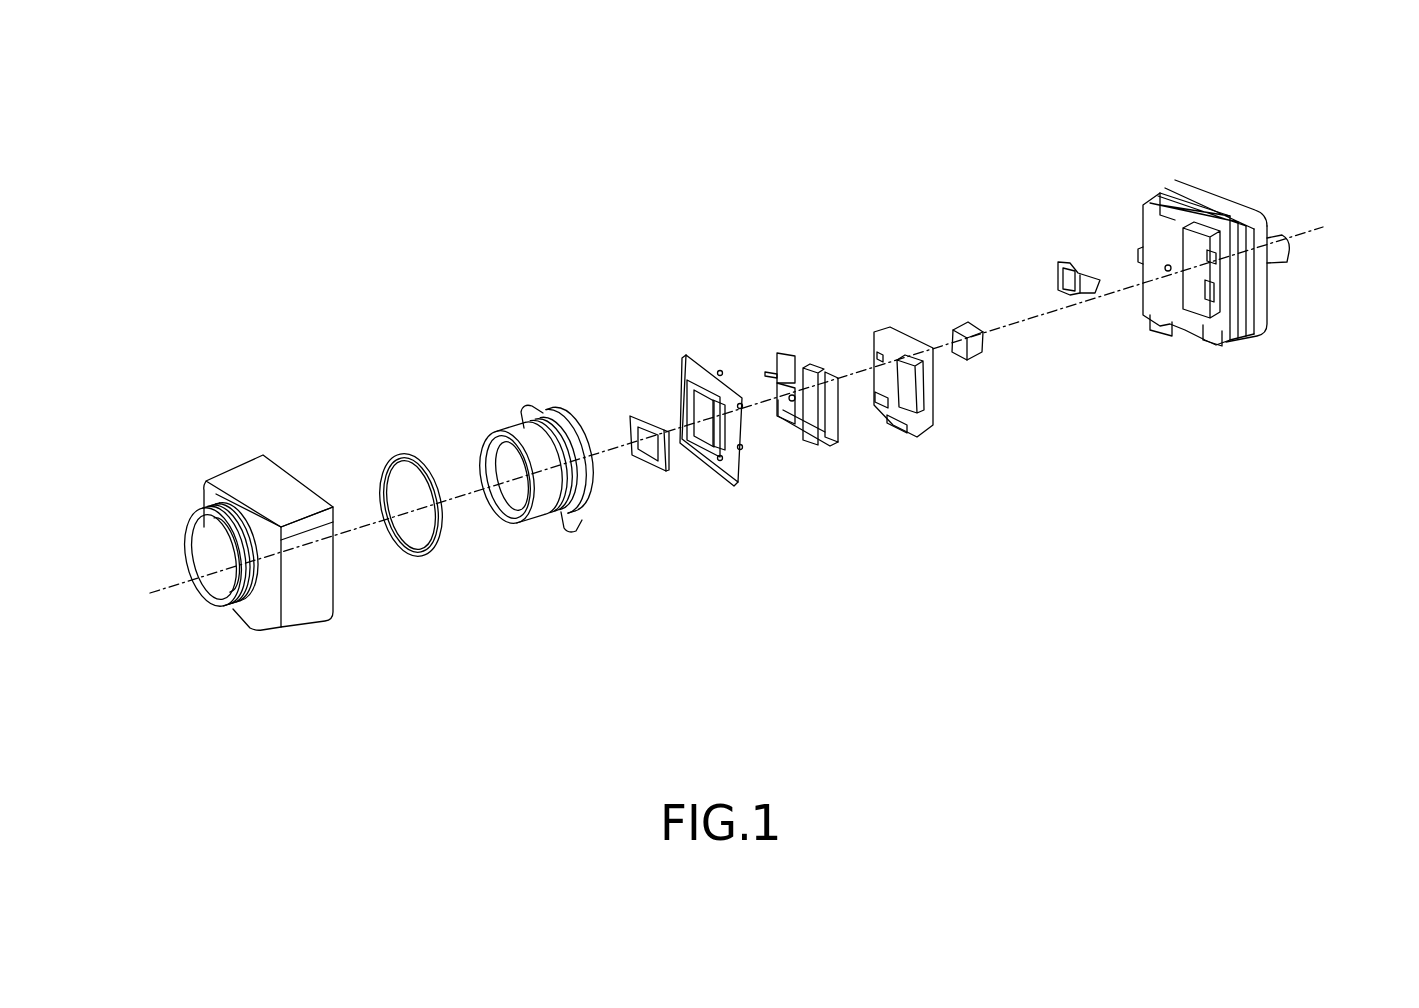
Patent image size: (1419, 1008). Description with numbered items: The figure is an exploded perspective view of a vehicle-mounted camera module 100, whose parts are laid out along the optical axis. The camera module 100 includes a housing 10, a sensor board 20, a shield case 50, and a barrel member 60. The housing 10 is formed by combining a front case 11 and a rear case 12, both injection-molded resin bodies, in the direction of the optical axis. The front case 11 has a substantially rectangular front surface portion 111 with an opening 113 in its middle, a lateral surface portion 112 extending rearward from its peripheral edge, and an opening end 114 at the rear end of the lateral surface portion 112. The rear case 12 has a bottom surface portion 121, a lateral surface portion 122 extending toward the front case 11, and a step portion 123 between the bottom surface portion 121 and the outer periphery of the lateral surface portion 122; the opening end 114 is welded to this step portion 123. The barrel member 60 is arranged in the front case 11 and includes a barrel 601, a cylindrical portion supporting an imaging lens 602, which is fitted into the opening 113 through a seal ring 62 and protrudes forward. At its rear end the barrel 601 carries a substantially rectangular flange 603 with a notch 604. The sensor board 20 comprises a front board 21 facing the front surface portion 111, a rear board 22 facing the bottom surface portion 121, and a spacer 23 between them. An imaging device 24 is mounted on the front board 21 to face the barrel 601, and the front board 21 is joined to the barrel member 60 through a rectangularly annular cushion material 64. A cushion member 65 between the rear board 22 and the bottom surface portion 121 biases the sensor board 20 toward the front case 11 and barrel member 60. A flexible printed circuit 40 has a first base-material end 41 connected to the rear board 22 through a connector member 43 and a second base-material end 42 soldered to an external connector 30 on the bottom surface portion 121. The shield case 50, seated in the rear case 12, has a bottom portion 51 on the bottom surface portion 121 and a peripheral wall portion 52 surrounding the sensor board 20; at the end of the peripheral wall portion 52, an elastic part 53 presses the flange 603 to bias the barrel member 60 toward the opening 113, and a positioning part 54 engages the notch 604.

The camera module 100 is at (1126, 618).
The housing 10 is at (735, 396).
The front case 11 is at (237, 432).
The front surface portion 111 is at (245, 614).
The lateral surface portion 112 is at (313, 570).
The opening 113 is at (201, 550).
The opening end 114 is at (290, 468).
The rear case 12 is at (1199, 160).
The bottom surface portion 121 is at (1273, 317).
The lateral surface portion 122 is at (1220, 210).
The step portion 123 is at (1253, 340).
The sensor board 20 is at (1033, 515).
The front board 21 is at (743, 457).
The rear board 22 is at (927, 423).
The spacer 23 is at (838, 440).
The imaging device 24 is at (693, 353).
The external connector 30 is at (1290, 257).
The flexible printed circuit 40 is at (1058, 343).
The first base-material end 41 is at (1062, 262).
The second base-material end 42 is at (1098, 292).
The connector member 43 is at (1060, 282).
The shield case 50 is at (1122, 250).
The bottom portion 51 is at (1197, 303).
The peripheral wall portion 52 is at (1160, 207).
The elastic part 53 is at (1207, 313).
The positioning part 54 is at (1167, 307).
The barrel member 60 is at (573, 530).
The barrel 601 is at (507, 432).
The imaging lens 602 is at (495, 468).
The flange 603 is at (588, 432).
The notch 604 is at (583, 483).
The seal ring 62 is at (437, 537).
The cushion material 64 is at (647, 477).
The cushion member 65 is at (960, 322).